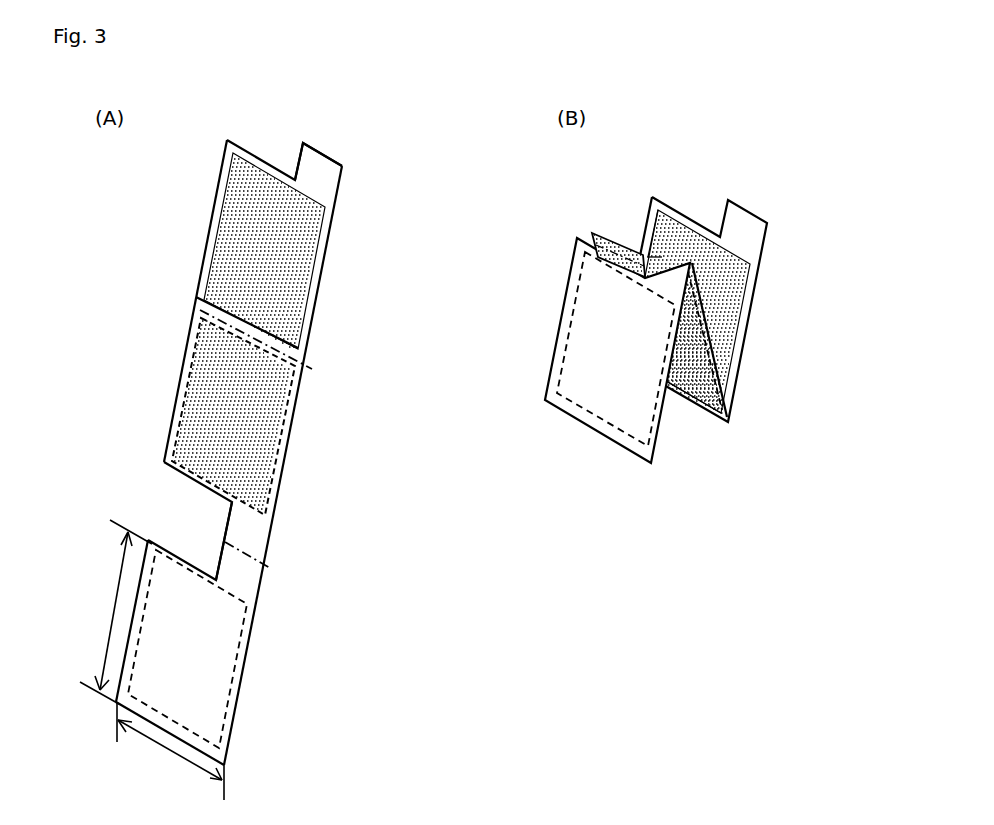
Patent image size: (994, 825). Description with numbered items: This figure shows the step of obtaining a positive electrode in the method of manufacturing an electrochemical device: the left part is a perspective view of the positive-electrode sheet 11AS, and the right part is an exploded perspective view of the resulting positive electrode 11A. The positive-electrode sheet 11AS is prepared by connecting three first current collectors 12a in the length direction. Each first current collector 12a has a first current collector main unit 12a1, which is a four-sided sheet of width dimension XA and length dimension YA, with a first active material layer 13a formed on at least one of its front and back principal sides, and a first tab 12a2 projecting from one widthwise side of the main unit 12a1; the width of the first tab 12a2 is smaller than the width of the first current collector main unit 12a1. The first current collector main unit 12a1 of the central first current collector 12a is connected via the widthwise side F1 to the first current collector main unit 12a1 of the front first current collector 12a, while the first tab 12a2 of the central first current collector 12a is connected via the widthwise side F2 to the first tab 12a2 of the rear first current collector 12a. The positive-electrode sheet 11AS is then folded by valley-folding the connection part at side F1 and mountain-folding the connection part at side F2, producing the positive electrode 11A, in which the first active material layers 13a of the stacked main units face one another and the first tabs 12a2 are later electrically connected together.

The positive-electrode sheet 11AS is at (406, 143).
The positive electrode 11A is at (766, 155).
The first current collector 12a is at (330, 230).
The first current collector main unit 12a1 is at (310, 300).
The first tab 12a2 is at (330, 180).
The first active material layer 13a is at (305, 270).
The widthwise side F1 is at (217, 312).
The widthwise side F2 is at (248, 552).
The width dimension XA is at (170, 751).
The length dimension YA is at (116, 612).